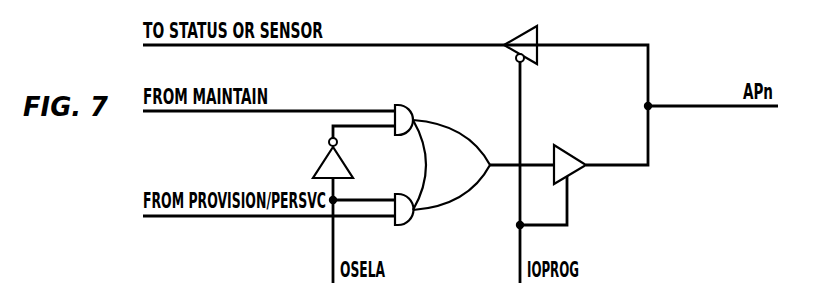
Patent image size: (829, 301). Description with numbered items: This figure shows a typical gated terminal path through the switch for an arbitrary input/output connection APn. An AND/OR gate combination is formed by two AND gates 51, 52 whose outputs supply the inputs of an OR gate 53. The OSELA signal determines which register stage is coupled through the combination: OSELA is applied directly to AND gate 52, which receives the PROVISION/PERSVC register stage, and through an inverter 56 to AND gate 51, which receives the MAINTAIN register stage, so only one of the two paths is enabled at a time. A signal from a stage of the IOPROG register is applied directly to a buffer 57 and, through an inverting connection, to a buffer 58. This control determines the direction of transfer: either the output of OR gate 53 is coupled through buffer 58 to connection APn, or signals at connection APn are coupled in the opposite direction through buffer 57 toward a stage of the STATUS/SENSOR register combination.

The AND gate 51 is at (401, 104).
The AND gate 52 is at (402, 226).
The OR gate 53 is at (462, 137).
The inverter 56 is at (342, 152).
The buffer 57 is at (518, 36).
The buffer 58 is at (573, 145).